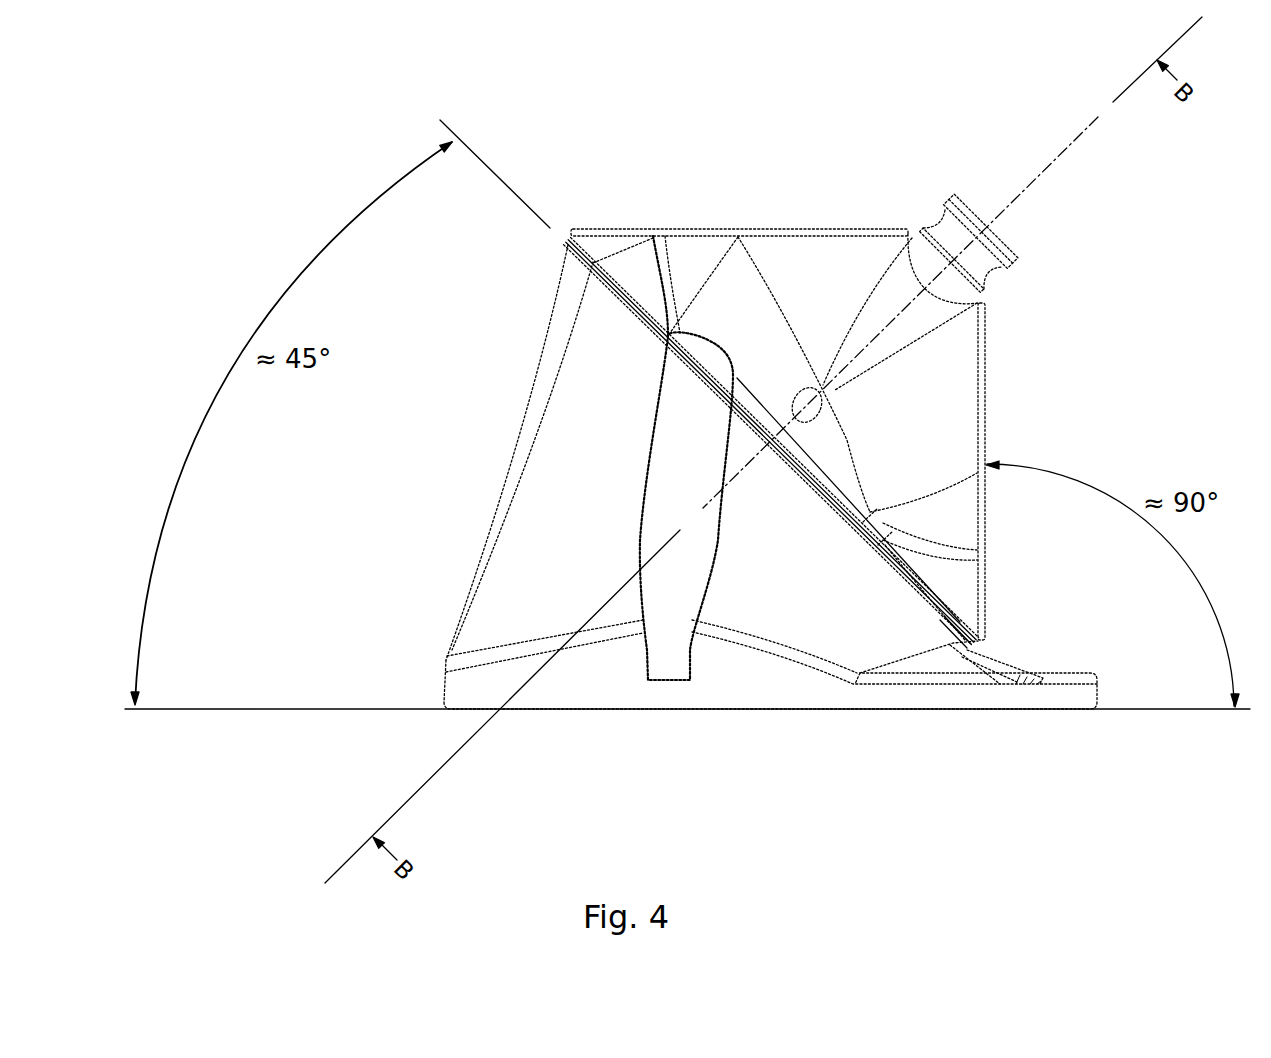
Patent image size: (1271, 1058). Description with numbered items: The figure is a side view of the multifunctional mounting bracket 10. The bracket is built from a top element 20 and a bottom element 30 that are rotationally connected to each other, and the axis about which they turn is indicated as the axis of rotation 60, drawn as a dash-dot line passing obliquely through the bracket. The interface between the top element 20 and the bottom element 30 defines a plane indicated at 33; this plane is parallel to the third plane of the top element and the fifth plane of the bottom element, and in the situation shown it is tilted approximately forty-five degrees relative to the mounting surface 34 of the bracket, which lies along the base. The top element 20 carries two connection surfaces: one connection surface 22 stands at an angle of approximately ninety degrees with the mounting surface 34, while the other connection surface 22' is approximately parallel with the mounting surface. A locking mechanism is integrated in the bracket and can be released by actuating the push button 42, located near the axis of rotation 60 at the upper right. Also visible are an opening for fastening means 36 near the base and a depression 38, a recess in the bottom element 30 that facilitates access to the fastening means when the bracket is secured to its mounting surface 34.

The multifunctional mounting bracket 10 is at (804, 124).
The top element 20 is at (966, 422).
The connection surface 22 is at (739, 191).
The connection surface 22' is at (1034, 471).
The bottom element 30 is at (520, 503).
The interface plane 33 is at (568, 243).
The mounting surface 34 is at (822, 710).
The opening for fastening means 36 is at (1003, 667).
The depression 38 is at (668, 640).
The push button 42 is at (1013, 253).
The axis of rotation 60 is at (1023, 190).